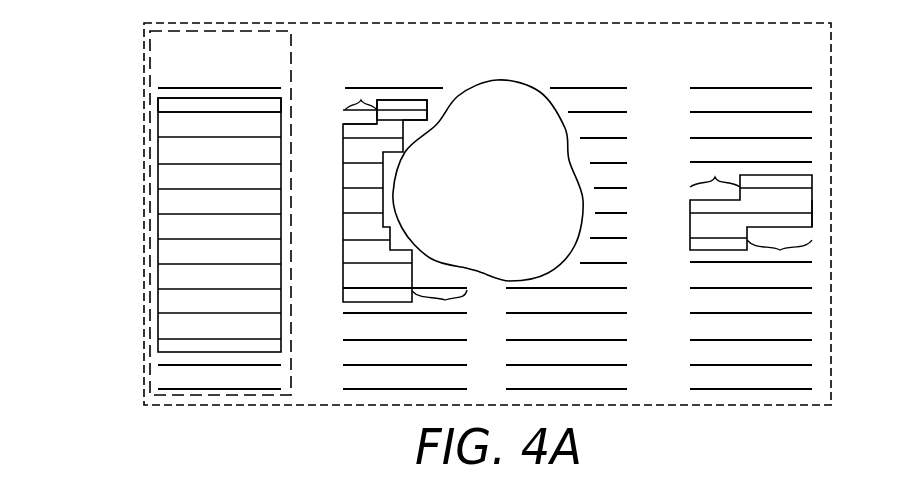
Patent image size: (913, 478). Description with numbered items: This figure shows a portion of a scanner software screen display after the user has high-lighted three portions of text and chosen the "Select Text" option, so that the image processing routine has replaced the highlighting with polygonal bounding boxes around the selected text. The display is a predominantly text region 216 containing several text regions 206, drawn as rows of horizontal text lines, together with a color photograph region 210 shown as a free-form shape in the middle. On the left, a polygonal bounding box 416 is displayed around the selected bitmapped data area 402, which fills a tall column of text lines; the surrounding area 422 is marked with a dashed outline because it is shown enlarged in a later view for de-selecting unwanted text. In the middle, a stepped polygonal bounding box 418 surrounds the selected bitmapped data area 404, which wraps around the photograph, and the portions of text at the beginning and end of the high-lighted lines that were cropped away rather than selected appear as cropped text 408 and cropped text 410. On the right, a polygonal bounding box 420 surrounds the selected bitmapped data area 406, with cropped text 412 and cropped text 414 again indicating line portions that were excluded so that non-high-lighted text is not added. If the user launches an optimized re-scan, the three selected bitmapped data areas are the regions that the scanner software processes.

The text region 206 is at (213, 88).
The color photograph region 210 is at (495, 80).
The predominantly text region 216 is at (832, 196).
The selected bitmapped data area 402 is at (197, 110).
The selected bitmapped data area 404 is at (412, 108).
The selected bitmapped data area 406 is at (787, 188).
The cropped text 408 is at (360, 100).
The cropped text 410 is at (445, 300).
The cropped text 412 is at (708, 176).
The cropped text 414 is at (780, 250).
The polygonal bounding box 416 is at (158, 198).
The polygonal bounding box 418 is at (343, 203).
The polygonal bounding box 420 is at (812, 208).
The area 422 is at (150, 139).